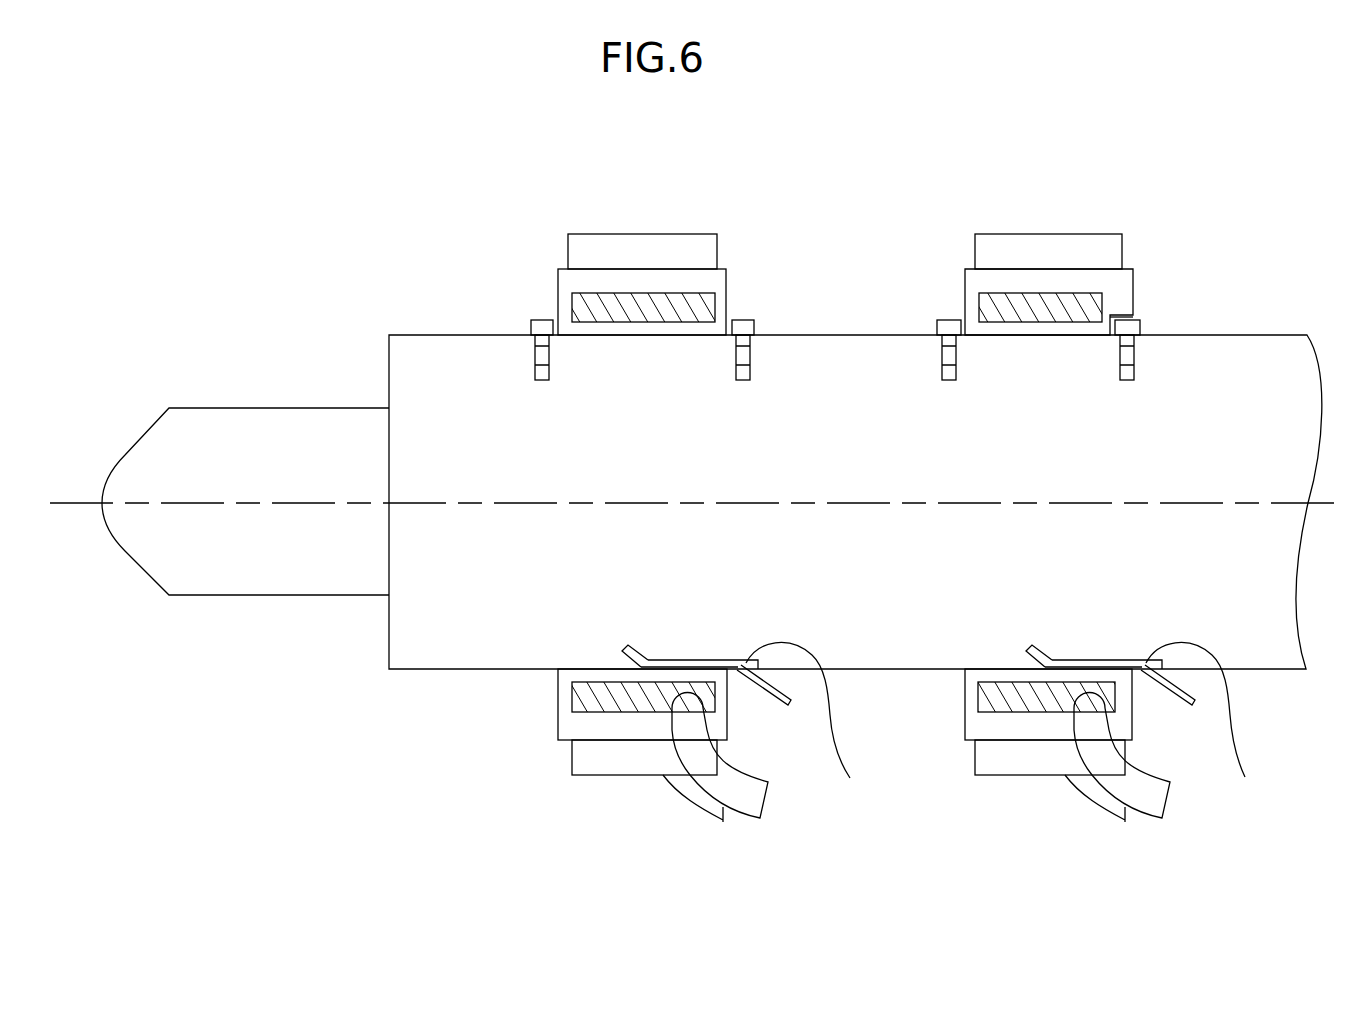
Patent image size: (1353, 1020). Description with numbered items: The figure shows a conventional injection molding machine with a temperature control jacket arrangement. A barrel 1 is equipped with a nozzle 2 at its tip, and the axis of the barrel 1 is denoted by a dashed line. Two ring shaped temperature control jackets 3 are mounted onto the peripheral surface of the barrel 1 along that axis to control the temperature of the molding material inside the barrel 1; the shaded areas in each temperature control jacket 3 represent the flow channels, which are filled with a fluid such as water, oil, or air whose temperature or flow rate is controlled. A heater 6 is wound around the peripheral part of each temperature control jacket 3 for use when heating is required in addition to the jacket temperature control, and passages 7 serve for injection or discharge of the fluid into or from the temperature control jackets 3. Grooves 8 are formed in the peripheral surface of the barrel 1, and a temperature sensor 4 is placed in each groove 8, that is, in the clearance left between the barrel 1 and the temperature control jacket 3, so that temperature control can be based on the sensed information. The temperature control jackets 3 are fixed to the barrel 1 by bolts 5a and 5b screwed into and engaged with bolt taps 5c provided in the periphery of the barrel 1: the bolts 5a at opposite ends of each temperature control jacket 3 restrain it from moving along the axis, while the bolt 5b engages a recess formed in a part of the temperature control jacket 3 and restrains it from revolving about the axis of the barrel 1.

The barrel 1 is at (1252, 562).
The nozzle 2 is at (286, 538).
The temperature control jacket 3 is at (722, 271).
The temperature sensor 4 is at (773, 700).
The bolt 5a is at (528, 320).
The bolt 5b is at (1138, 319).
The bolt tap 5c is at (530, 332).
The heater 6 is at (643, 250).
The passage 7 is at (712, 768).
The groove 8 is at (1009, 729).